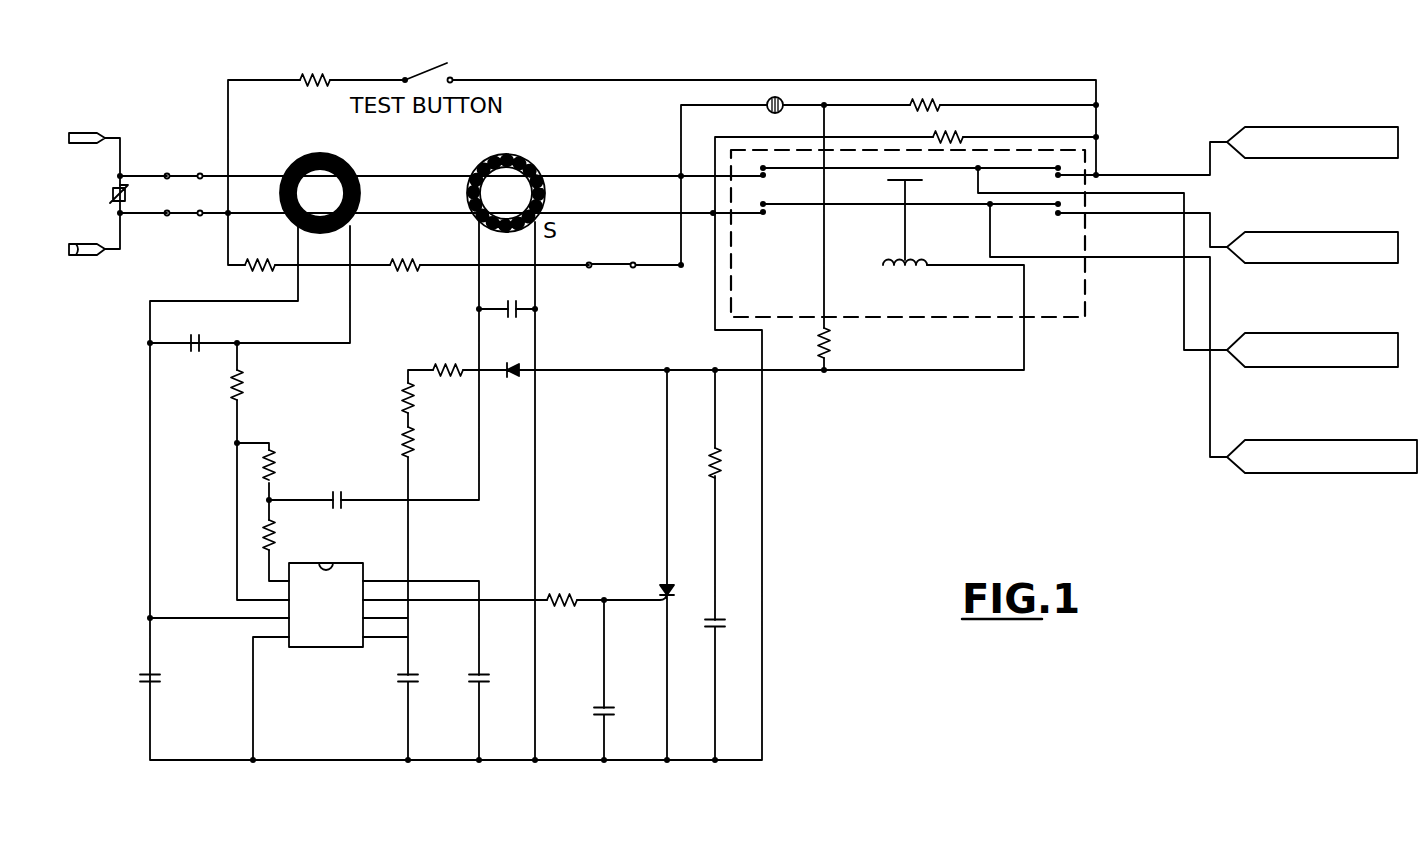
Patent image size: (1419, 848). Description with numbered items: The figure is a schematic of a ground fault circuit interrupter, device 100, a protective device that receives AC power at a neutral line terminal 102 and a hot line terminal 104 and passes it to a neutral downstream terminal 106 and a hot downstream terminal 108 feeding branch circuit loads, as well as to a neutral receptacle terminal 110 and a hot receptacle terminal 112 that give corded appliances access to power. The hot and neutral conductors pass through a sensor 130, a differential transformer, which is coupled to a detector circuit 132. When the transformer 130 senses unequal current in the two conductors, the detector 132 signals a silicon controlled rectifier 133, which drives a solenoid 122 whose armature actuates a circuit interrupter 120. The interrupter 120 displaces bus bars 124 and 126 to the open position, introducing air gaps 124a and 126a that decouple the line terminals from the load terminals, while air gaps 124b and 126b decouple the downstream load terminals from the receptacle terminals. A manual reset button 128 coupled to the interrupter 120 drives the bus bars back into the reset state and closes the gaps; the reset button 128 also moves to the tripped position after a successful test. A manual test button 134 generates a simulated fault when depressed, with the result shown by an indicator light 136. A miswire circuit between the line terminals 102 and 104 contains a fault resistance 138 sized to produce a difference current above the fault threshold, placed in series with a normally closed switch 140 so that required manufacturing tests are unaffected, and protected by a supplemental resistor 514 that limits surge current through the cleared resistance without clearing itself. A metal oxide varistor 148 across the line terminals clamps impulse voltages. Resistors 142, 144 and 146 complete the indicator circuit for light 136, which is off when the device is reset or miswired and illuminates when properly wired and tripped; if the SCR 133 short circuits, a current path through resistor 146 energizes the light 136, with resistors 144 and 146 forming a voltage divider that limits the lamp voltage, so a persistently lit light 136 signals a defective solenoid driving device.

The device 100 is at (782, 464).
The neutral line terminal 102 is at (105, 255).
The hot line terminal 104 is at (103, 133).
The neutral downstream terminal 106 is at (1262, 264).
The hot downstream terminal 108 is at (1298, 125).
The neutral receptacle terminal 110 is at (1262, 474).
The hot receptacle terminal 112 is at (1262, 368).
The circuit interrupter 120 is at (1057, 320).
The solenoid 122 is at (922, 262).
The bus bar 124 is at (1002, 208).
The air gap 124a is at (763, 215).
The air gap 124b is at (1066, 216).
The bus bar 126 is at (988, 165).
The air gap 126a is at (760, 165).
The air gap 126b is at (1064, 174).
The manual reset button 128 is at (905, 178).
The sensor 130 is at (318, 154).
The detector circuit 132 is at (328, 562).
The silicon controlled rectifier 133 is at (667, 592).
The manual test button 134 is at (426, 70).
The indicator light 136 is at (770, 98).
The fault resistance 138 is at (400, 262).
The normally closed switch 140 is at (612, 268).
The resistor 142 is at (950, 130).
The resistor 144 is at (920, 100).
The resistor 146 is at (837, 339).
The metal oxide varistor 148 is at (122, 190).
The supplemental resistor 514 is at (250, 262).